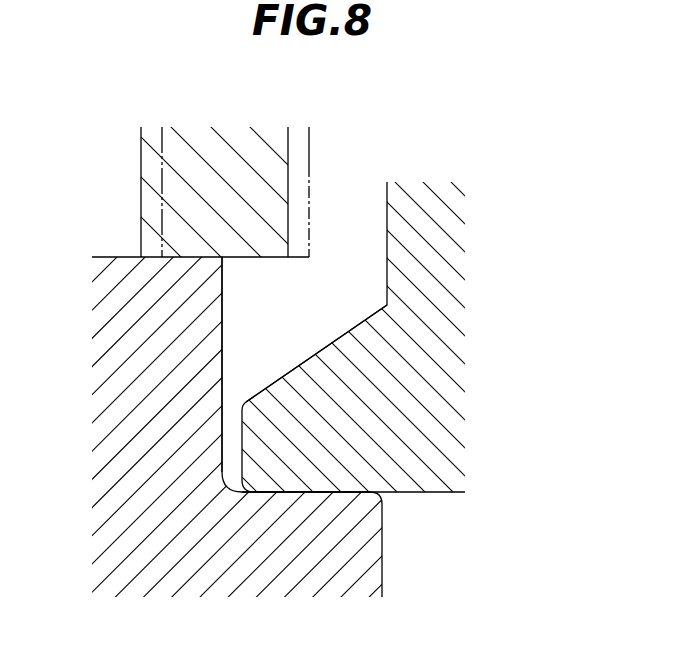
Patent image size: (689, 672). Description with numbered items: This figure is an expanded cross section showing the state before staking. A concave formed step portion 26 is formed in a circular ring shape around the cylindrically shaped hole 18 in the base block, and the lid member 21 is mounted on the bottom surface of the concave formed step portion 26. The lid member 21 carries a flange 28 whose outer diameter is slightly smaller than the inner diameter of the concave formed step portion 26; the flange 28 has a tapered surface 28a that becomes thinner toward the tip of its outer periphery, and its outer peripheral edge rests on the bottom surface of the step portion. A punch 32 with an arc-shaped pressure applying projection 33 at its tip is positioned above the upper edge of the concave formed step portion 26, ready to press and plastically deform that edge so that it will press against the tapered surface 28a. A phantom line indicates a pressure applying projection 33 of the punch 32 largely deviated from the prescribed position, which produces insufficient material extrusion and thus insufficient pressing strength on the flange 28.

The cylindrically shaped hole 18 is at (382, 537).
The lid member 21 is at (442, 377).
The concave formed step portion 26 is at (223, 327).
The flange 28 is at (285, 457).
The tapered surface 28a is at (340, 335).
The punch 32 is at (312, 187).
The pressure applying projection 33 is at (373, 174).